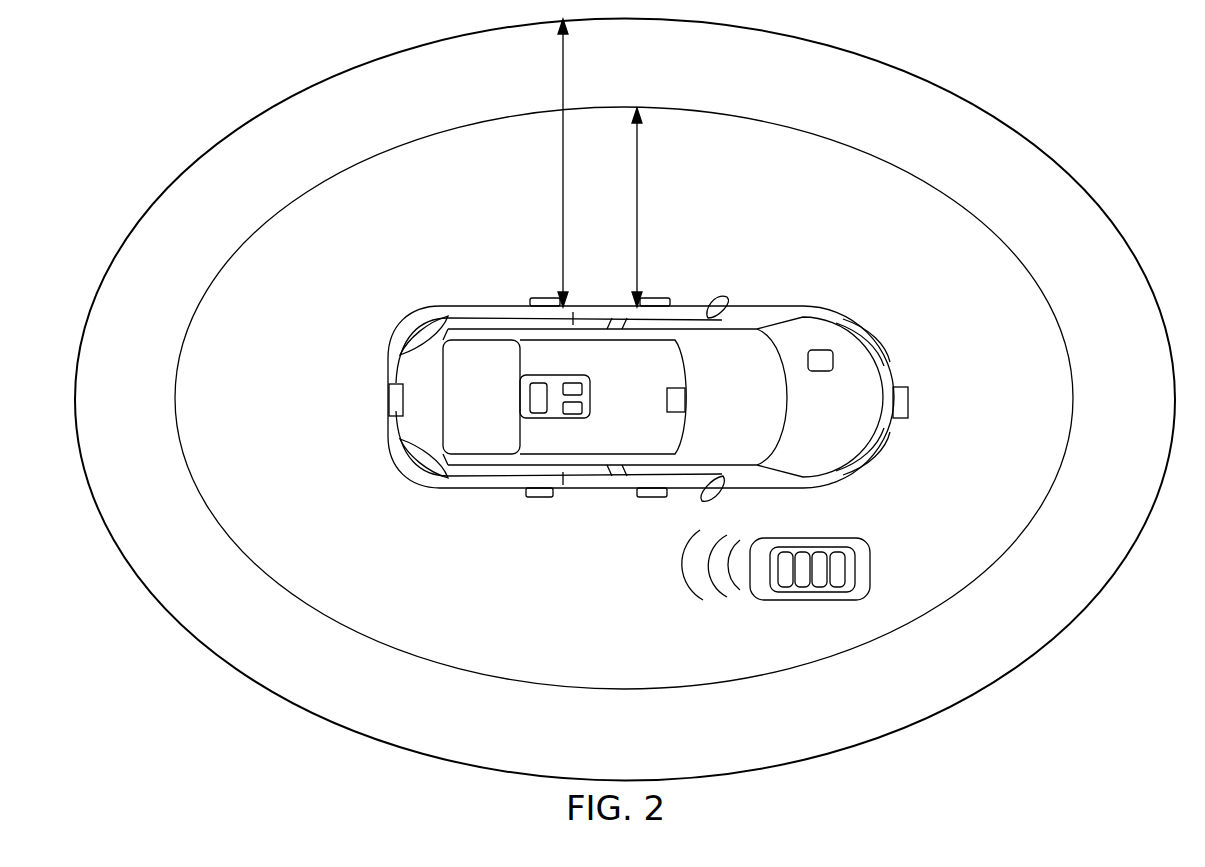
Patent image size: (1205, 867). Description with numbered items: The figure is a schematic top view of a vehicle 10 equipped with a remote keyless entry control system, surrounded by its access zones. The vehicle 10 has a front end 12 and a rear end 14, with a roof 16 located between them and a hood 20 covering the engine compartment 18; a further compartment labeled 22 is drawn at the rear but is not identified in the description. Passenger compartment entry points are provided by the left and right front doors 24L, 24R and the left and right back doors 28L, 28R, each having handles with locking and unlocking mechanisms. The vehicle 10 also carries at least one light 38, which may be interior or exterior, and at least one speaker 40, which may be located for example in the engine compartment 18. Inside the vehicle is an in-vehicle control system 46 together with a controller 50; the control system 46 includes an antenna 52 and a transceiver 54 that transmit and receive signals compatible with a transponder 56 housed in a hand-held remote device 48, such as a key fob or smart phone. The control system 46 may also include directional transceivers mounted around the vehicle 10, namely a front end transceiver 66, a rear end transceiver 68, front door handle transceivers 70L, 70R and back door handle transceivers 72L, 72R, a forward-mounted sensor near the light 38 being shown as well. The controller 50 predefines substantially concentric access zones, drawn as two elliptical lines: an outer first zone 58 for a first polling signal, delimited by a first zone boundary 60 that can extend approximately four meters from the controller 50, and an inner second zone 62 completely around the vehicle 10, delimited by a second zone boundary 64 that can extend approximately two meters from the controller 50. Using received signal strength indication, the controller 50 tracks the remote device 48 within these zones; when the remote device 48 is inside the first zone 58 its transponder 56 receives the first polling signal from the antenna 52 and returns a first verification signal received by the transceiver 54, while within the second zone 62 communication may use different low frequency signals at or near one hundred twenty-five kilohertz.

The vehicle 10 is at (990, 443).
The front end 12 is at (887, 432).
The rear end 14 is at (397, 460).
The roof 16 is at (675, 370).
The engine compartment 18 is at (842, 420).
The hood 20 is at (874, 365).
The trunk compartment 22 is at (480, 412).
The left front door 24L is at (697, 310).
The right front door 24R is at (693, 488).
The left back door 28L is at (573, 312).
The right back door 28R is at (563, 485).
The light 38 is at (684, 403).
The speaker 40 is at (818, 349).
The in-vehicle control system 46 is at (520, 422).
The remote device 48 is at (870, 567).
The controller 50 is at (522, 380).
The antenna 52 is at (584, 382).
The transceiver 54 is at (585, 413).
The transponder 56 is at (760, 585).
The first zone 58 is at (561, 143).
The first zone boundary 60 is at (1013, 132).
The second zone 62 is at (639, 178).
The second zone boundary 64 is at (969, 212).
The front end transceiver 66 is at (910, 402).
The rear end transceiver 68 is at (388, 393).
The left front door handle transceiver 70L is at (657, 303).
The right front door handle transceiver 70R is at (650, 492).
The left back door handle transceiver 72L is at (535, 298).
The right back door handle transceiver 72R is at (530, 494).